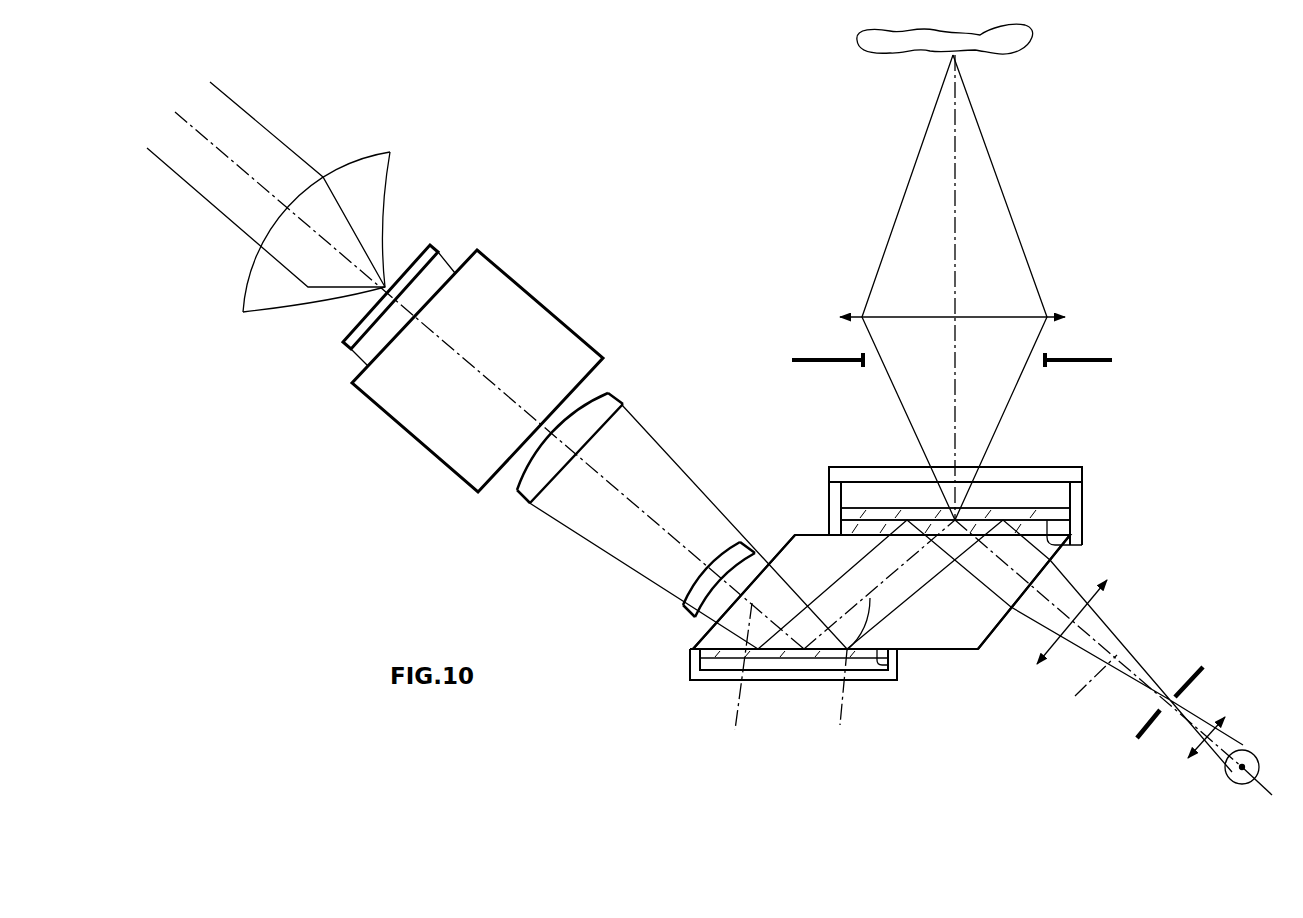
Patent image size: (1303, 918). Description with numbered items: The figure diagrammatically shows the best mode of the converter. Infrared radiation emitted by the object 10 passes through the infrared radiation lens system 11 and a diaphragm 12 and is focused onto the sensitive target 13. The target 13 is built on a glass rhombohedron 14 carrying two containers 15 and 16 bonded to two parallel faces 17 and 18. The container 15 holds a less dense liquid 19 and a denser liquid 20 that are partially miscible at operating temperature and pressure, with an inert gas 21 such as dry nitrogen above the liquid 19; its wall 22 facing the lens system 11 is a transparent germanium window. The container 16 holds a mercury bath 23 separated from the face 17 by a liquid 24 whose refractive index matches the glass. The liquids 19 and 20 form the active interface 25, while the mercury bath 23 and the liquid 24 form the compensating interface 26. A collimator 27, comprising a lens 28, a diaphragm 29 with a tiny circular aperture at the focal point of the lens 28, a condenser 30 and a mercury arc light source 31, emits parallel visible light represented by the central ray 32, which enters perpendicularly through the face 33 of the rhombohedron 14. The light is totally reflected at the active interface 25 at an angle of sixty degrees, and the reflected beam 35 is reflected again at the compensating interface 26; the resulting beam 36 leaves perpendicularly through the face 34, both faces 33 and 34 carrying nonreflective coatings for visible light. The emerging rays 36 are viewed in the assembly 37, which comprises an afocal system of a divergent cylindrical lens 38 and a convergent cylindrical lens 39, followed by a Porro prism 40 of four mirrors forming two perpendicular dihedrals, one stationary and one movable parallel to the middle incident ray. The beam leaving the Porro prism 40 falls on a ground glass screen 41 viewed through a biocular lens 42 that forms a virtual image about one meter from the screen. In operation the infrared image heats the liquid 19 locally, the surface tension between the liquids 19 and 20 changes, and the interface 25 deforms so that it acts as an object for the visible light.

The object 10 is at (917, 47).
The infrared radiation lens system 11 is at (1043, 313).
The diaphragm 12 is at (1050, 368).
The sensitive target 13 is at (933, 473).
The glass rhombohedron 14 is at (1055, 551).
The container 15 is at (1082, 493).
The container 16 is at (803, 684).
The face of the rhombohedron 17 is at (952, 650).
The face of the rhombohedron 18 is at (821, 527).
The liquid 19 is at (1078, 513).
The liquid 20 is at (1063, 526).
The inert gas 21 is at (880, 502).
The wall 22 is at (865, 473).
The mercury bath 23 is at (874, 666).
The liquid 24 is at (895, 662).
The active interface 25 is at (1072, 541).
The compensating interface 26 is at (790, 658).
The collimator 27 is at (1130, 705).
The lens 28 is at (1092, 607).
The diaphragm 29 is at (1188, 677).
The condenser 30 is at (1218, 718).
The light source 31 is at (1245, 752).
The central ray 32 is at (1076, 685).
The face of the rhombohedron 33 is at (992, 634).
The face of the rhombohedron 34 is at (704, 633).
The reflected beam 35 is at (849, 675).
The reflected beam 36 is at (732, 682).
The viewing assembly 37 is at (465, 510).
The divergent lens 38 is at (748, 540).
The convergent lens 39 is at (616, 398).
The Porro prism 40 is at (541, 320).
The screen 41 is at (433, 249).
The biocular lens 42 is at (376, 178).